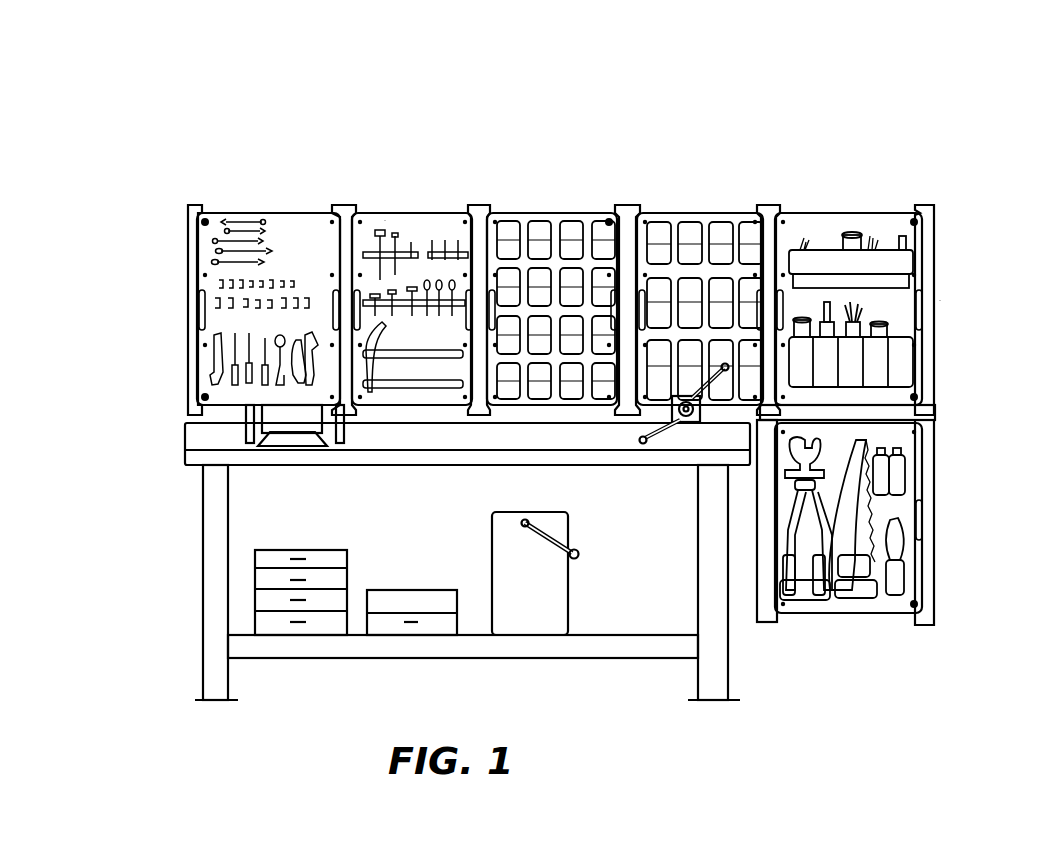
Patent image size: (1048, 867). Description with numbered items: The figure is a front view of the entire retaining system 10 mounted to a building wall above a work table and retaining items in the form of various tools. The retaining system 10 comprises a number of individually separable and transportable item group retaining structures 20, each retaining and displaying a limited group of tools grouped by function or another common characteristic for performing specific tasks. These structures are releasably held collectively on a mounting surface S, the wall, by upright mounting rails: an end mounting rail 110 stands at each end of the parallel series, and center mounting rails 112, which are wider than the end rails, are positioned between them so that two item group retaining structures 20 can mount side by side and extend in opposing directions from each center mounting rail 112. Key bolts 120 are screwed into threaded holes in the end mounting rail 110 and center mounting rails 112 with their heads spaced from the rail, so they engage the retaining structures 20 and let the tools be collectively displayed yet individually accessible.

The retaining system 10 is at (884, 137).
The item group retaining structure 20 is at (286, 213).
The end mounting rail 110 is at (199, 213).
The center mounting rail 112 is at (346, 212).
The key bolt 120 is at (200, 213).
The mounting surface S is at (390, 165).